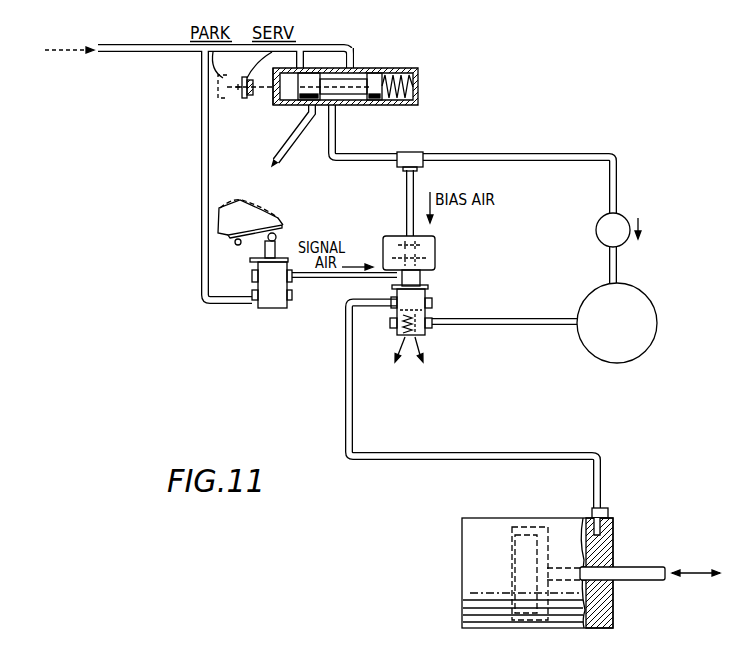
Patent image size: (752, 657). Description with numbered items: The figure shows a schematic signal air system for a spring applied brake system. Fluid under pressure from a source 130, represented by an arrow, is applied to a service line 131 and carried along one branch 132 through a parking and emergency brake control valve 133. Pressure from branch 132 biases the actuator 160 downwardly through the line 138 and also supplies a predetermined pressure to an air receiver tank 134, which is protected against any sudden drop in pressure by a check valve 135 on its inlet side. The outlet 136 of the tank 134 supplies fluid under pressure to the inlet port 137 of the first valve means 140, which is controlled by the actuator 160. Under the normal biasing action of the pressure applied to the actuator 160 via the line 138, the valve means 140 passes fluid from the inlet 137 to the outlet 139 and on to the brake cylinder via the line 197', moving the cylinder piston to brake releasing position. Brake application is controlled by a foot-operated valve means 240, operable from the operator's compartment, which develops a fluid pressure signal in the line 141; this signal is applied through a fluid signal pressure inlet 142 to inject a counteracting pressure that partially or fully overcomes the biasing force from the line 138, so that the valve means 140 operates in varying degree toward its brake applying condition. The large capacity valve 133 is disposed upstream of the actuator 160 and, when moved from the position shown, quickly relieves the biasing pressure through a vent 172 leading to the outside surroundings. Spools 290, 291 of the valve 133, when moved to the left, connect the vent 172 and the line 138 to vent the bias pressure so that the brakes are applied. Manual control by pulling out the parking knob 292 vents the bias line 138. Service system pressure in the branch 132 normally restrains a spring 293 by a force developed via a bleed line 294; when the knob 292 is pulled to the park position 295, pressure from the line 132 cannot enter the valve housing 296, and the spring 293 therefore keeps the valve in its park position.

The source of fluid under pressure 130 is at (60, 48).
The service line 131 is at (158, 53).
The branch 132 is at (352, 44).
The parking and emergency brake control valve 133 is at (347, 80).
The air receiver tank 134 is at (645, 310).
The check valve 135 is at (597, 226).
The outlet 136 is at (568, 324).
The inlet port 137 is at (428, 330).
The line 138 is at (336, 141).
The outlet 139 is at (392, 308).
The first valve means 140 is at (411, 333).
The line 141 is at (300, 279).
The fluid signal pressure inlet 142 is at (384, 262).
The actuator 160 is at (417, 255).
The vent 172 is at (295, 140).
The line 197' is at (473, 406).
The foot-operated valve means 240 is at (246, 279).
The spool 290 is at (303, 101).
The spool 291 is at (372, 101).
The parking knob 292 is at (246, 77).
The spring 293 is at (418, 98).
The bleed line 294 is at (299, 62).
The park position 295 is at (217, 93).
The valve housing 296 is at (272, 93).